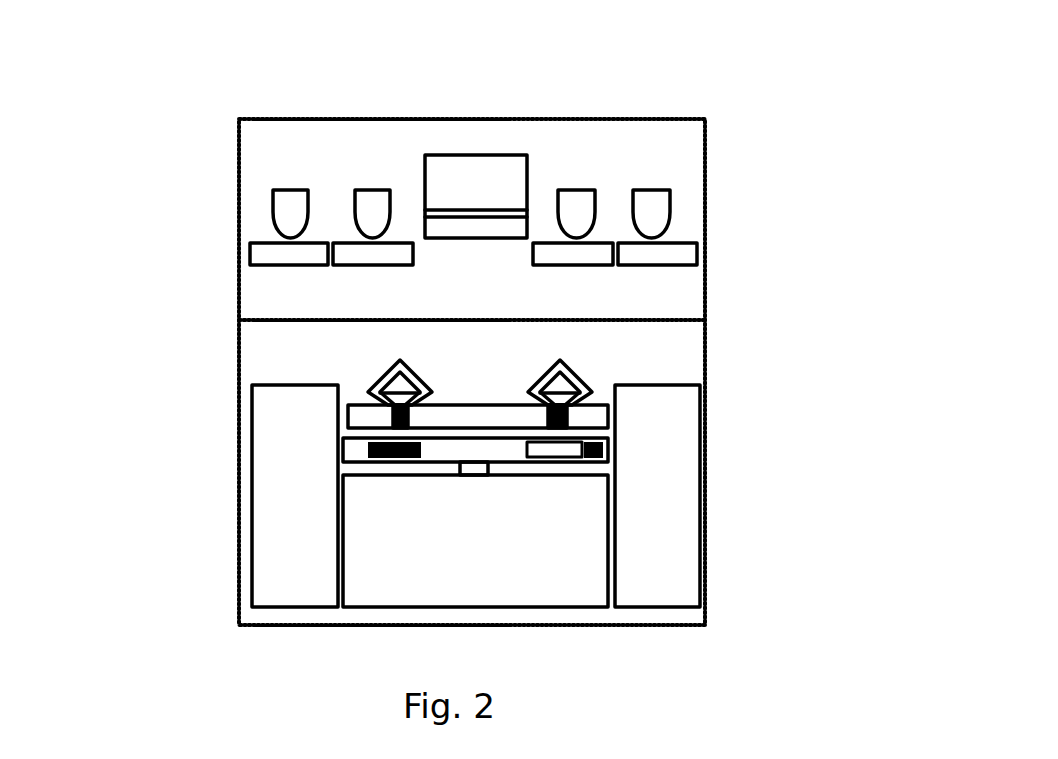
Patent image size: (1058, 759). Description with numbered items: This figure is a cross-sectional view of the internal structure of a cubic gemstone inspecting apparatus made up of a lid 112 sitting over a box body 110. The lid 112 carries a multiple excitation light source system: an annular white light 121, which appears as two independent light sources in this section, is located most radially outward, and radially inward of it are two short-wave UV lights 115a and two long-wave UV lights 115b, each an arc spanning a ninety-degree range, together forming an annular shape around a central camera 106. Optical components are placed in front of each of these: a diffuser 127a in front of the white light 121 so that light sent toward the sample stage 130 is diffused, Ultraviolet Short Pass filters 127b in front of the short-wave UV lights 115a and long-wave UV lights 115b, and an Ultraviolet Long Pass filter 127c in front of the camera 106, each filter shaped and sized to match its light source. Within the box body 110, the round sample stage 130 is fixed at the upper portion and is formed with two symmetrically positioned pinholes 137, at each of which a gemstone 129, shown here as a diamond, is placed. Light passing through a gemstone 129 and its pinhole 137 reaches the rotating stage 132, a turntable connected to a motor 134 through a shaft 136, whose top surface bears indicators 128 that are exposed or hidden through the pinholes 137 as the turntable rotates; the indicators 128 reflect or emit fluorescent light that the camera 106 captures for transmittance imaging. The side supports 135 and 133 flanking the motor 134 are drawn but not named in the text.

The box body 110 is at (275, 628).
The lid 112 is at (240, 148).
The white light 121 is at (290, 200).
The short-wave UV light 115a is at (373, 200).
The long-wave UV light 115b is at (578, 198).
The camera 106 is at (467, 163).
The Ultraviolet Long Pass (UVLP) filter 127c is at (515, 220).
The diffuser 127a is at (260, 255).
The Ultraviolet Short Pass (UVSP) filter 127b is at (367, 256).
The gemstone 129 is at (397, 377).
The sample stage 130 is at (450, 413).
The pinhole 137 is at (397, 420).
The indicator 128 is at (578, 445).
The rotating stage 132 is at (450, 452).
The shaft 136 is at (472, 468).
The left support 135 is at (263, 538).
The motor 134 is at (518, 567).
The right support 133 is at (673, 555).